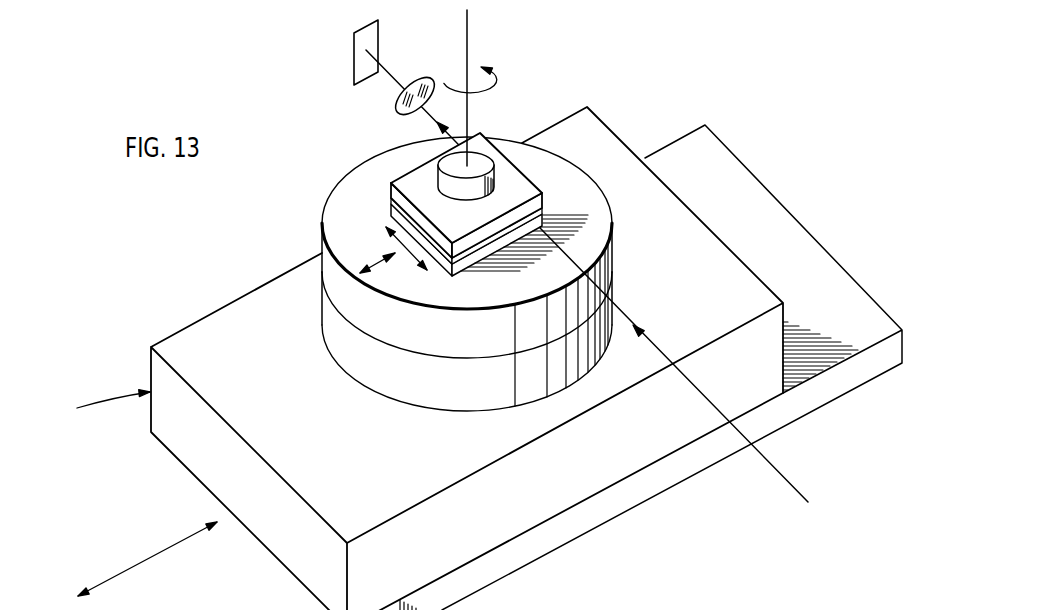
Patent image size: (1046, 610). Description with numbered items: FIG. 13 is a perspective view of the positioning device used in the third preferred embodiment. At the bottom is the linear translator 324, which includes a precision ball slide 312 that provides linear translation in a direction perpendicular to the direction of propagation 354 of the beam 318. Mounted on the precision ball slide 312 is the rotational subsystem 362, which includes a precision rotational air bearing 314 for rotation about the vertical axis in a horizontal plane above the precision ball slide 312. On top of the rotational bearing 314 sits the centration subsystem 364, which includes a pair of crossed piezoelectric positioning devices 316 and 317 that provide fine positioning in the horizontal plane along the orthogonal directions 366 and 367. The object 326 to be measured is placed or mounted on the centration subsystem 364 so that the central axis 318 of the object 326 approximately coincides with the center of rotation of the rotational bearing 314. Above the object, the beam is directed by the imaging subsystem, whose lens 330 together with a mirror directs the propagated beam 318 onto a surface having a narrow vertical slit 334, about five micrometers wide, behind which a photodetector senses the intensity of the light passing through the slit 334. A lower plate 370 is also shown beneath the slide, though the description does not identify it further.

The precision ball slide 312 is at (197, 453).
The precision rotational air bearing 314 is at (365, 312).
The piezoelectric positioning device 316 is at (512, 180).
The piezoelectric positioning device 317 is at (527, 229).
The central axis of the object 318 is at (393, 179).
The linear translator 324 is at (91, 404).
The object 326 is at (452, 172).
The lens 330 is at (397, 101).
The narrow vertical slit 334 is at (356, 58).
The direction of propagation 354 is at (773, 468).
The rotational subsystem 362 is at (400, 387).
The centration subsystem 364 is at (545, 200).
The orthogonal direction 366 is at (378, 258).
The orthogonal direction 367 is at (403, 245).
The base plate 370 is at (672, 367).